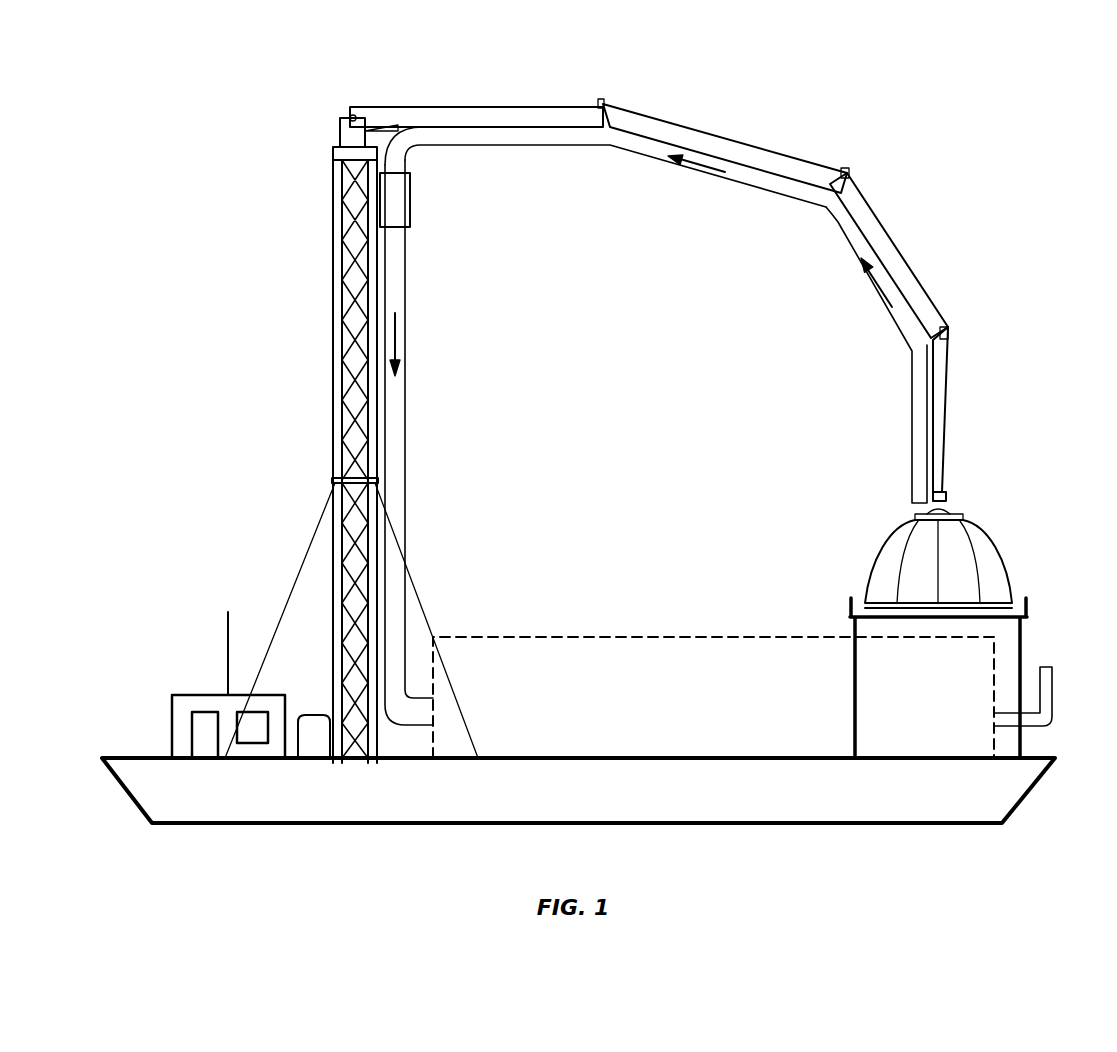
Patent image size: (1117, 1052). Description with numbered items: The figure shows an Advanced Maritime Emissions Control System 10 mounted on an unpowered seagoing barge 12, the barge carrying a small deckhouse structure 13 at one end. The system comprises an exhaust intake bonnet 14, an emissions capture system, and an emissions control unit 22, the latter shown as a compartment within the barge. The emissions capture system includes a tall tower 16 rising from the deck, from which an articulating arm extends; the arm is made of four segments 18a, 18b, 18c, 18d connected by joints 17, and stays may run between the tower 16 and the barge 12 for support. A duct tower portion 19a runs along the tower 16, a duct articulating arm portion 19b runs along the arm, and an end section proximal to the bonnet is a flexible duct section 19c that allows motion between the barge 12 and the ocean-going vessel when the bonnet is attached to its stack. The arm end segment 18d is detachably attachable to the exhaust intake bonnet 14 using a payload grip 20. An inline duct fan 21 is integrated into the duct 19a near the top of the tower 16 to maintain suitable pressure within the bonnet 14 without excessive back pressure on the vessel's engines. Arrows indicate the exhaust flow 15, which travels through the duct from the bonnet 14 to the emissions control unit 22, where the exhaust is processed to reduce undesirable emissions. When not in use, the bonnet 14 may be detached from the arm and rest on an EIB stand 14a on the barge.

The Advanced Maritime Emissions Control System 10 is at (172, 342).
The unpowered seagoing barge 12 is at (535, 801).
The control house 13 is at (178, 705).
The exhaust intake bonnet 14 is at (992, 572).
The EIB stand 14a is at (1023, 632).
The exhaust flow 15 is at (400, 333).
The tower 16 is at (332, 370).
The joints 17 is at (355, 104).
The articulating arm segment 18a is at (455, 118).
The articulating arm segment 18b is at (700, 135).
The articulating arm segment 18c is at (908, 260).
The articulating arm end segment 18d is at (942, 420).
The duct tower portion 19a is at (397, 445).
The duct articulating arm portion 19b is at (515, 130).
The flexible duct section 19c is at (920, 425).
The payload grip 20 is at (948, 497).
The inline duct fan 21 is at (397, 200).
The emissions control unit 22 is at (681, 704).